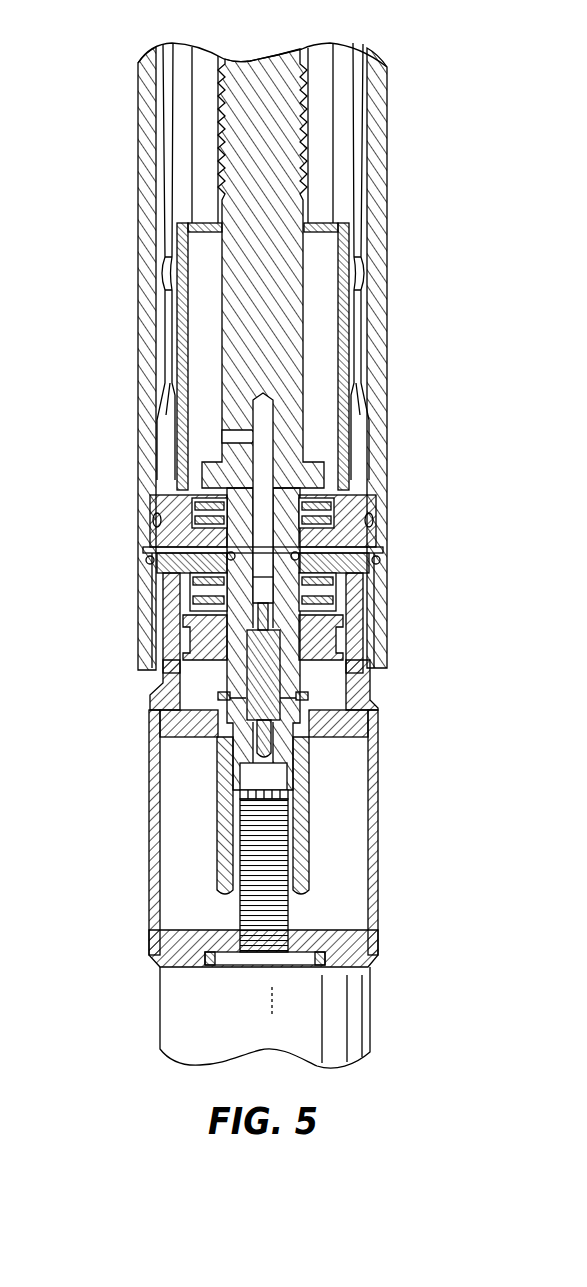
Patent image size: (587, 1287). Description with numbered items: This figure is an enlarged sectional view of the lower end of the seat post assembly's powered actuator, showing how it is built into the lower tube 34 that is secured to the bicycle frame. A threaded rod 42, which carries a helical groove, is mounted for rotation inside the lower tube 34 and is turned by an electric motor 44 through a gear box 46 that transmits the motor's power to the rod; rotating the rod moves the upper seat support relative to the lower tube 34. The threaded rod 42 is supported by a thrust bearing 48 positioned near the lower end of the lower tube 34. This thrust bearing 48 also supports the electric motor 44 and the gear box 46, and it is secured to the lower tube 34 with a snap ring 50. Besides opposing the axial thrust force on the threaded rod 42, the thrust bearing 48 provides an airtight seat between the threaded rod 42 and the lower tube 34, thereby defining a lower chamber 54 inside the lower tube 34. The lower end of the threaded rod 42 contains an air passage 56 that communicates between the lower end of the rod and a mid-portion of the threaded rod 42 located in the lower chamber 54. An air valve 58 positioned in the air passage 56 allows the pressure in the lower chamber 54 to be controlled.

The lower tube 34 is at (145, 198).
The threaded rod 42 is at (267, 80).
The electric motor 44 is at (358, 1032).
The gear box 46 is at (375, 855).
The thrust bearing 48 is at (350, 472).
The snap ring 50 is at (148, 562).
The lower chamber 54 is at (322, 308).
The air passage 56 is at (263, 482).
The air valve 58 is at (258, 713).